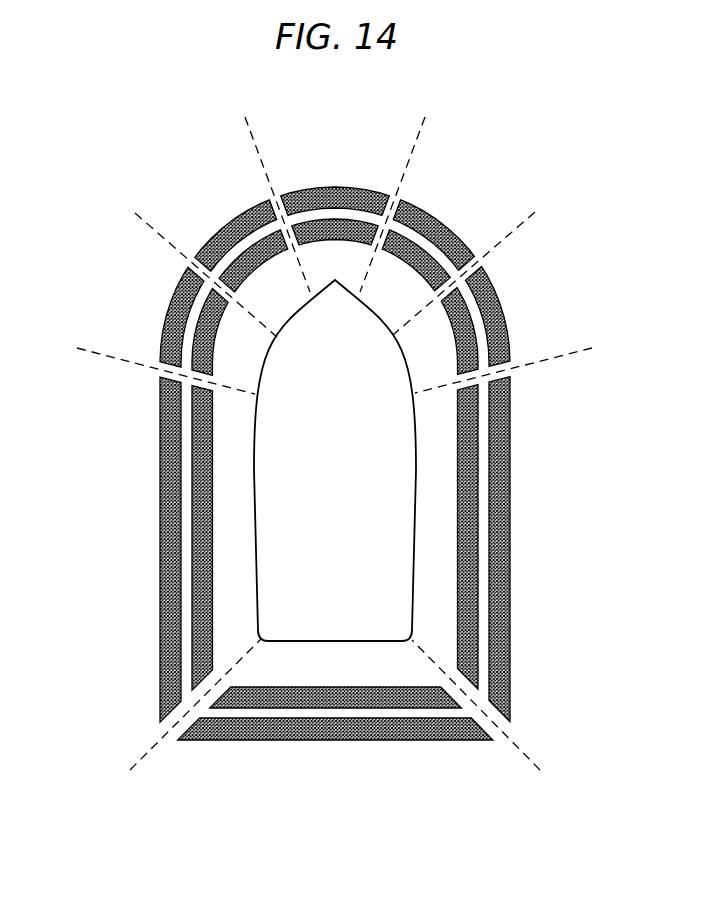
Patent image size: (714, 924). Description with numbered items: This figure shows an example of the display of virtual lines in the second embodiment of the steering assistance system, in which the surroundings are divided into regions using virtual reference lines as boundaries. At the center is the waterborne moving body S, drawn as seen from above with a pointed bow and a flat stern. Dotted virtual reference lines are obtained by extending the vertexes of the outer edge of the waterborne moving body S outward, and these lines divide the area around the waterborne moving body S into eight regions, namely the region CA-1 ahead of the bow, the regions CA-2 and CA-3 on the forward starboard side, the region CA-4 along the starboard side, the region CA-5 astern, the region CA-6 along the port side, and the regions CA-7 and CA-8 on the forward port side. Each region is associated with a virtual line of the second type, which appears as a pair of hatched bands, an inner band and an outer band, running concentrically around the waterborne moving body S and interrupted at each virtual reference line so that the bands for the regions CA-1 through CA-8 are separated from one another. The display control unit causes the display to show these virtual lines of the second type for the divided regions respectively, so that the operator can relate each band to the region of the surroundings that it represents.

The region CA-1 is at (301, 162).
The region CA-2 is at (428, 202).
The region CA-3 is at (511, 305).
The region CA-4 is at (541, 548).
The region CA-5 is at (301, 782).
The region CA-6 is at (63, 548).
The region CA-7 is at (96, 307).
The region CA-8 is at (176, 202).
The waterborne moving body S is at (325, 492).